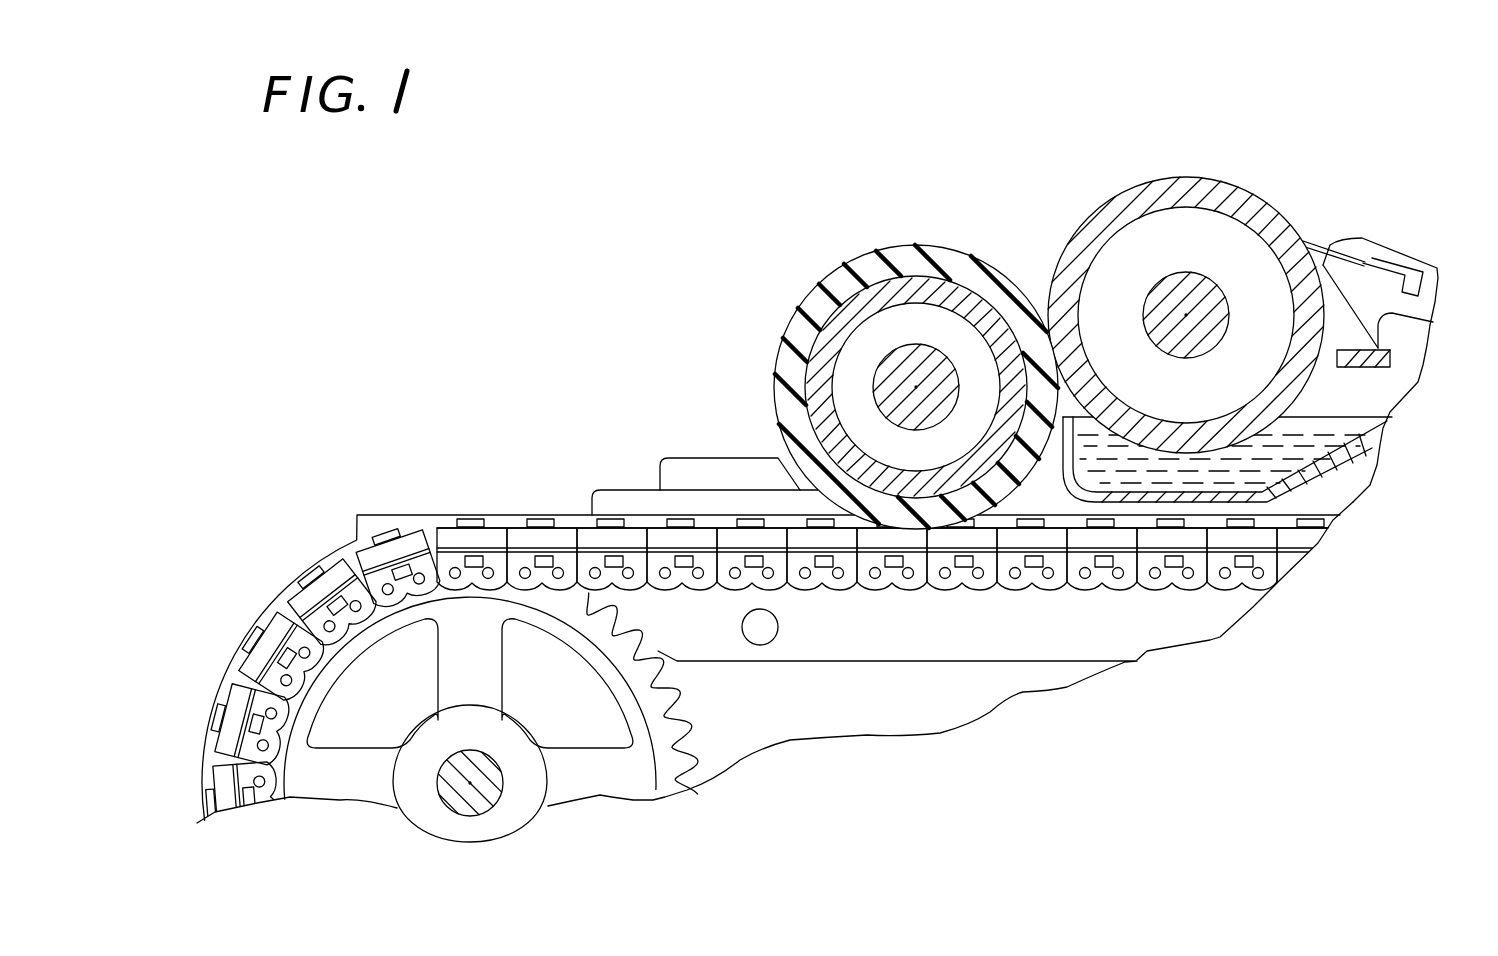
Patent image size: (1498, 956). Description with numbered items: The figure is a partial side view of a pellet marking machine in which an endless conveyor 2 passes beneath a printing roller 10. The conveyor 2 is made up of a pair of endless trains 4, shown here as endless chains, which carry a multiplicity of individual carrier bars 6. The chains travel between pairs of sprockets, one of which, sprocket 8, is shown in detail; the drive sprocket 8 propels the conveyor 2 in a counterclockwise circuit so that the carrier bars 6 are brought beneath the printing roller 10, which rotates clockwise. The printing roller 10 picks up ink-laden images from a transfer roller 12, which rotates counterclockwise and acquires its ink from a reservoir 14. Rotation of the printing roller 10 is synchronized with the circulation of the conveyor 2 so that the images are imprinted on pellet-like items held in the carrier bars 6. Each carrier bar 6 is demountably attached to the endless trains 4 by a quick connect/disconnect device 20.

The endless conveyor 2 is at (503, 448).
The endless train 4 is at (380, 580).
The carrier bar 6 is at (372, 550).
The sprocket 8 is at (308, 767).
The printing roller 10 is at (823, 278).
The transfer roller 12 is at (1100, 203).
The reservoir 14 is at (1387, 423).
The quick connect/disconnect device 20 is at (541, 523).